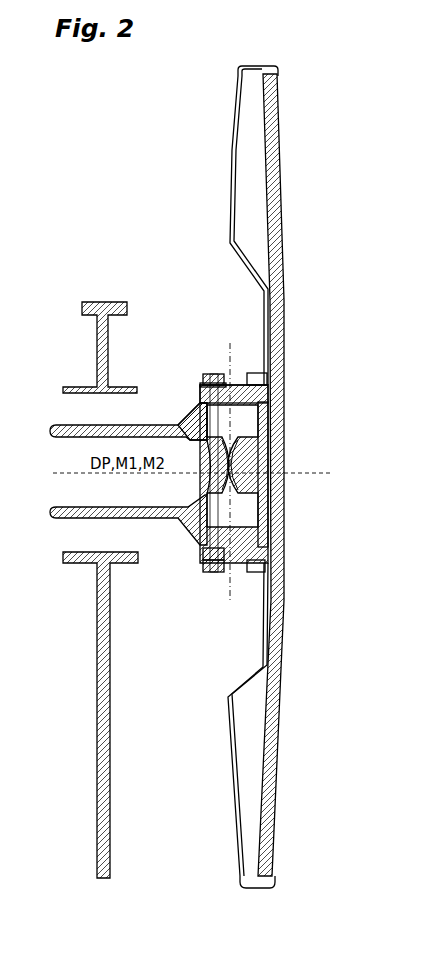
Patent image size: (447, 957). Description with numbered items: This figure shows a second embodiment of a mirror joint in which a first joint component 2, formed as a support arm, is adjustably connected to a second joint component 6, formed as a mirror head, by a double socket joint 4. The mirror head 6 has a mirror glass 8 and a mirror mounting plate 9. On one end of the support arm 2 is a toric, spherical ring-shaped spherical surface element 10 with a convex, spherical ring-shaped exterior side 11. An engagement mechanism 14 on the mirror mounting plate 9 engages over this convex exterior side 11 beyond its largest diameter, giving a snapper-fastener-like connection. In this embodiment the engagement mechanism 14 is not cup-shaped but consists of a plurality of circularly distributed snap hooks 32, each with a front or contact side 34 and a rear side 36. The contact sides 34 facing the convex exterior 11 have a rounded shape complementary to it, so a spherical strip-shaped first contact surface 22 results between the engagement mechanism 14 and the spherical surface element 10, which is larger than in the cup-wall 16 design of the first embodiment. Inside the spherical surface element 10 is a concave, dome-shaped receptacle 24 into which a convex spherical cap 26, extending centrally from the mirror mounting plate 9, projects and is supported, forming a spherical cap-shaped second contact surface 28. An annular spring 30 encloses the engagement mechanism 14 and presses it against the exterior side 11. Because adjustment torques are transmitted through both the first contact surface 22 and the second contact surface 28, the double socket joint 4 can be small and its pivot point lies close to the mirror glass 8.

The first joint component 2 is at (70, 427).
The double socket joint 4 is at (186, 402).
The second joint component 6 is at (290, 73).
The mirror glass 8 is at (283, 215).
The mirror mounting plate 9 is at (232, 160).
The spherical surface element 10 is at (288, 537).
The exterior side 11 is at (192, 527).
The engagement mechanism 14 is at (234, 394).
The cup wall 16 is at (277, 387).
The first contact surface 22 is at (287, 362).
The receptacle 24 is at (204, 494).
The spherical cap 26 is at (240, 455).
The second contact surface 28 is at (240, 485).
The annular spring 30 is at (216, 375).
The snap hooks 32 is at (187, 403).
The contact side 34 is at (213, 573).
The rear side 36 is at (197, 393).